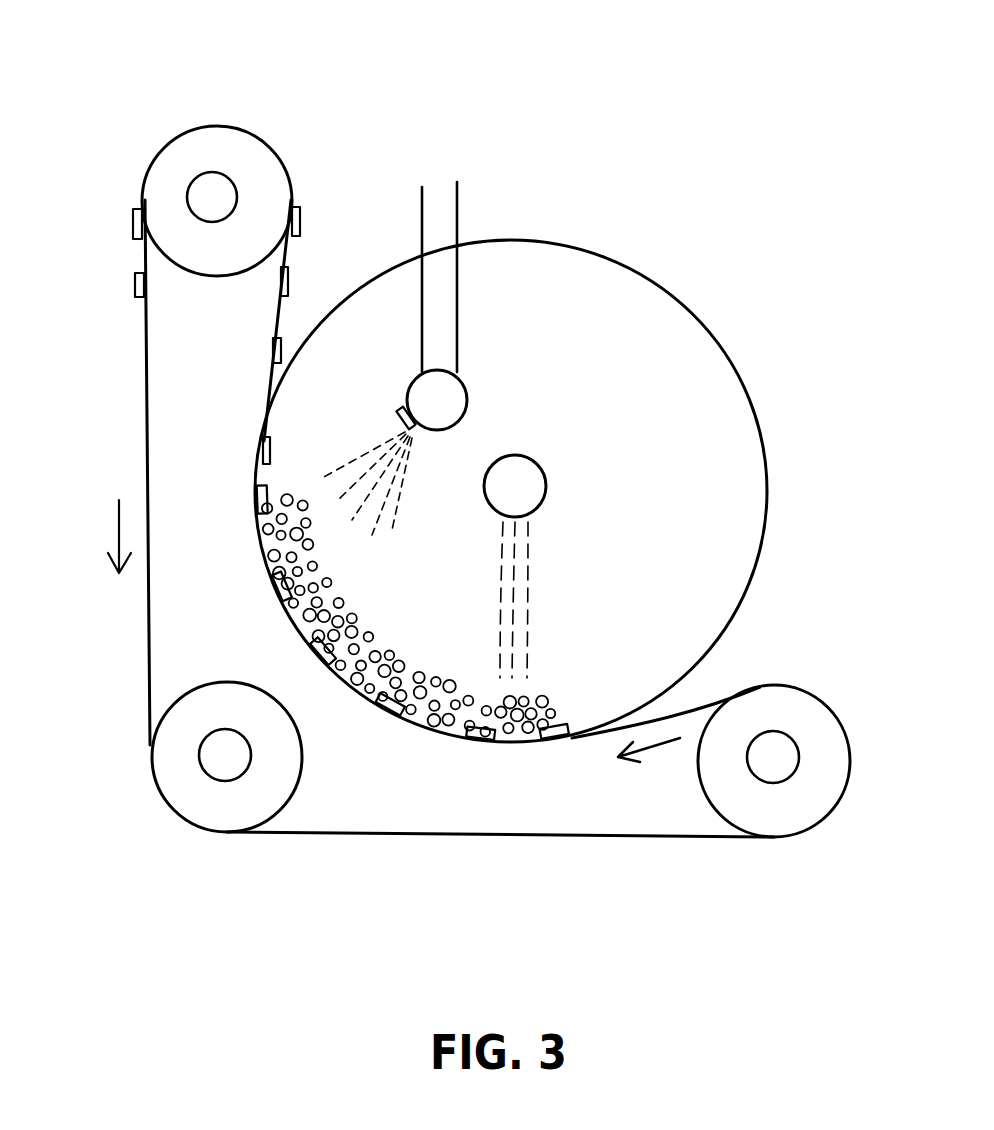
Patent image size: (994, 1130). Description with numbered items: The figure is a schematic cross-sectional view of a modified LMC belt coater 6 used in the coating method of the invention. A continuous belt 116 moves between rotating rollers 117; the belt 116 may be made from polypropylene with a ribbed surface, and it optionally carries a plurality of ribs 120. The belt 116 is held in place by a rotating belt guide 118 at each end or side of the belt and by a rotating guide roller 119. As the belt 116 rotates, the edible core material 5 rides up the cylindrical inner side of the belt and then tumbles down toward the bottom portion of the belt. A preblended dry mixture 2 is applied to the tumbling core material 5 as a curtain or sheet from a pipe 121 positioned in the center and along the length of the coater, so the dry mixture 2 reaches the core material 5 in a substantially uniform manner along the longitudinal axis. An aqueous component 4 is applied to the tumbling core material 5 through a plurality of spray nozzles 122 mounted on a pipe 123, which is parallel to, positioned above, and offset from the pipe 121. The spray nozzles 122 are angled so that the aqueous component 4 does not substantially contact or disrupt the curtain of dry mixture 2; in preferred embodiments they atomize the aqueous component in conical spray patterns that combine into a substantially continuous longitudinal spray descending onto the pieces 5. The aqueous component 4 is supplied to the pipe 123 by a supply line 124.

The modified LMC belt coater 6 is at (382, 68).
The continuous belt 116 is at (147, 408).
The rotating rollers 117 is at (183, 135).
The rotating belt guide 118 is at (700, 330).
The rotating guide roller 119 is at (190, 825).
The ribs 120 is at (299, 217).
The pipe 121 is at (545, 470).
The spray nozzles 122 is at (403, 410).
The pipe 123 is at (462, 392).
The supply line 124 is at (458, 200).
The aqueous component 4 is at (373, 437).
The preblended dry mixture 2 is at (530, 582).
The edible core material 5 is at (362, 612).